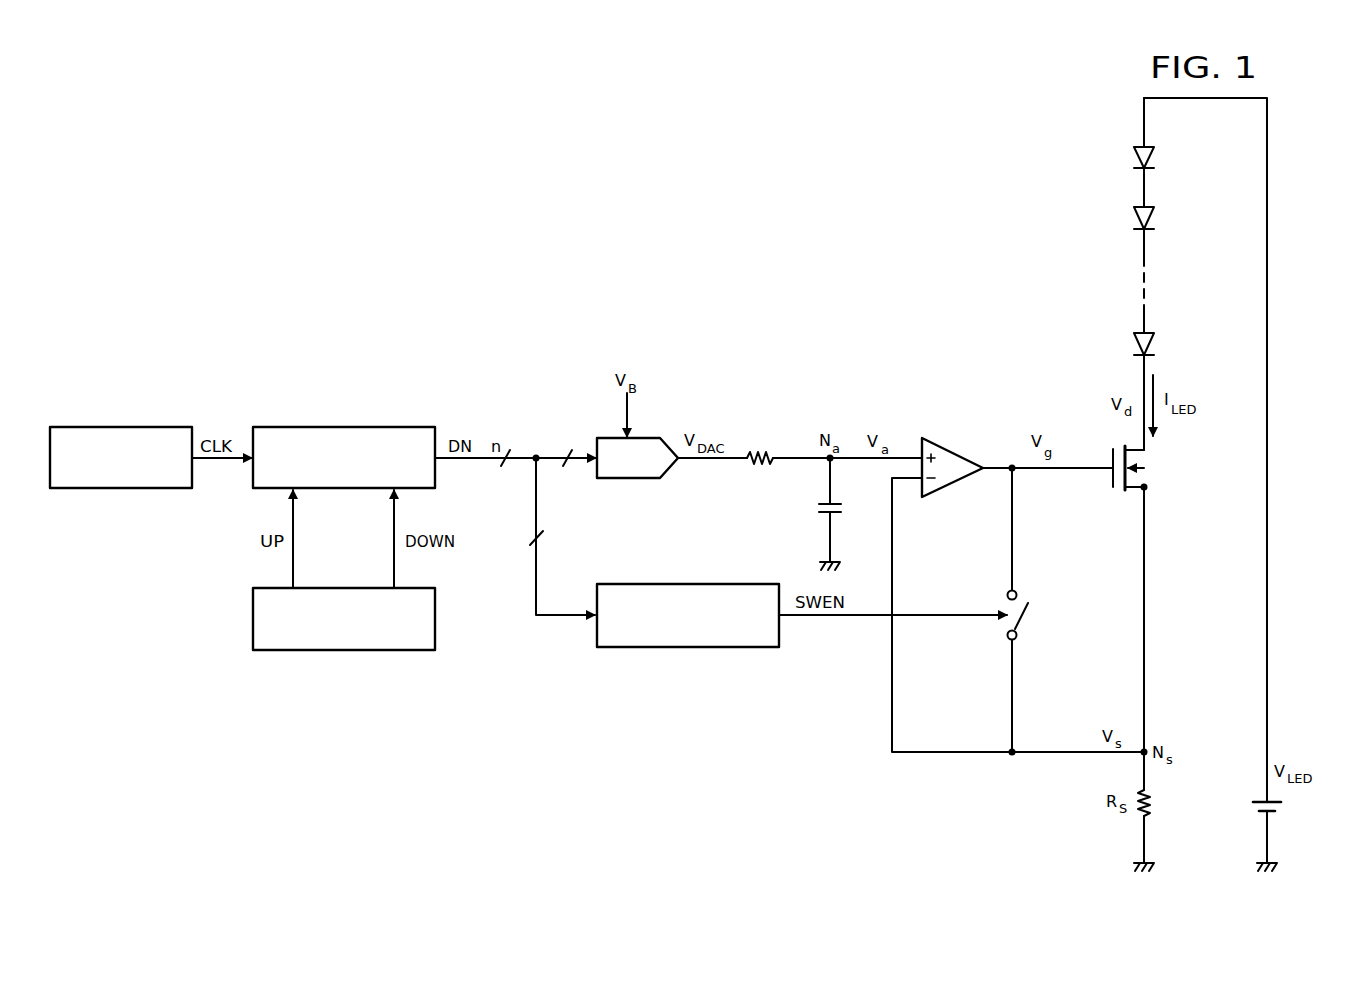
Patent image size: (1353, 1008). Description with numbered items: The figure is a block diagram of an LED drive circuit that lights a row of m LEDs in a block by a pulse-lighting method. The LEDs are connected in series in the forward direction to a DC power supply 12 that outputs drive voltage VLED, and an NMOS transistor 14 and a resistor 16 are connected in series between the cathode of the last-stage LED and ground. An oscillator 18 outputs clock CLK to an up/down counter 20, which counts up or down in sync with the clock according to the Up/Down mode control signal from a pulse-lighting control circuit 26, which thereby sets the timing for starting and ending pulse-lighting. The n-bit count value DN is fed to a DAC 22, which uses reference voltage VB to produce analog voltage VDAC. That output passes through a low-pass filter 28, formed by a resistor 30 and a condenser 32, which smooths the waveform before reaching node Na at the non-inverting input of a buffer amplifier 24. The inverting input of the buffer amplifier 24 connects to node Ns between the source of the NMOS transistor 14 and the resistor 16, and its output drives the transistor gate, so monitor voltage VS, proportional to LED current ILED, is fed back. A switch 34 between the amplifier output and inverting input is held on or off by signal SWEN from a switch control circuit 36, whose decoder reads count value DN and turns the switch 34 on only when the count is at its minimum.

The DC power supply 12 is at (1281, 806).
The NMOS transistor 14 is at (1108, 479).
The resistor 16 is at (1150, 803).
The oscillator 18 is at (121, 425).
The up/down counter 20 is at (344, 425).
The DAC 22 is at (617, 480).
The buffer amplifier 24 is at (951, 455).
The pulse-lighting control circuit 26 is at (338, 651).
The low-pass filter 28 is at (794, 471).
The resistor 30 is at (761, 454).
The condenser 32 is at (820, 508).
The switch 34 is at (1030, 622).
The switch control circuit 36 is at (688, 649).